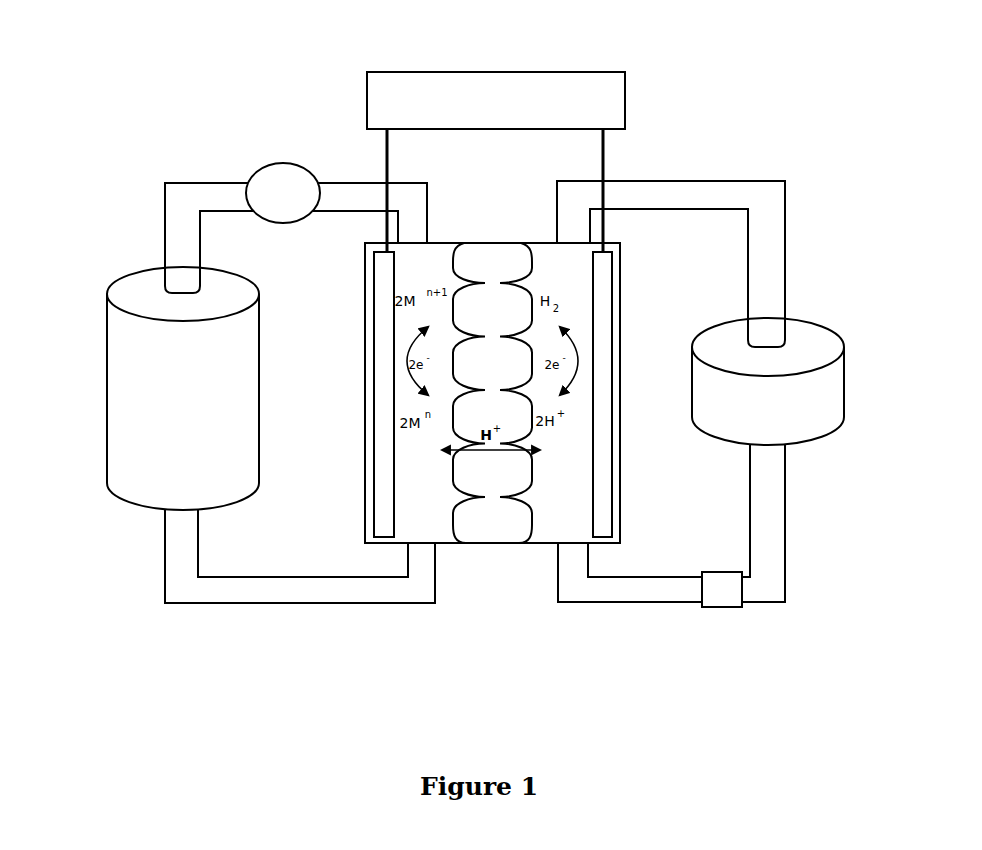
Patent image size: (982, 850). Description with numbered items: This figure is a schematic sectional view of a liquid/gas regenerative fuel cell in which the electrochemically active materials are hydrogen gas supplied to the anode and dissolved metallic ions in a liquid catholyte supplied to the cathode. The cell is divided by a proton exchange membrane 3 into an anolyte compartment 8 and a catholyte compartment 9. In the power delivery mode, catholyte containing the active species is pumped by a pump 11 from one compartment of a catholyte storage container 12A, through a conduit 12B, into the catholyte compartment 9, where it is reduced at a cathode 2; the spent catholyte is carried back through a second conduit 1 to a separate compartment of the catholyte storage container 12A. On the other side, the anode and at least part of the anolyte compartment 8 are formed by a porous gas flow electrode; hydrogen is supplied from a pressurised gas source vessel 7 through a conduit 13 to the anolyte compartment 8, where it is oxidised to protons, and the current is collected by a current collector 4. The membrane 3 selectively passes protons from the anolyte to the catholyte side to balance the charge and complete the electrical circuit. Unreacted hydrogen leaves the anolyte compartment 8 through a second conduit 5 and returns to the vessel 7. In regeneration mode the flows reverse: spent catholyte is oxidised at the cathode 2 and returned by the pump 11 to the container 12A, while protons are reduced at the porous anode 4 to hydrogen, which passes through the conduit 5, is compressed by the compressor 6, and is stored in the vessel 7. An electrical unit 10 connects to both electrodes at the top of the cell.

The second conduit 1 is at (282, 590).
The cathode 2 is at (385, 530).
The proton exchange membrane 3 is at (488, 527).
The current collector 4 is at (599, 530).
The second conduit 5 is at (668, 590).
The compressor 6 is at (722, 595).
The pressurised gas source vessel 7 is at (823, 402).
The anolyte compartment 8 is at (580, 273).
The catholyte compartment 9 is at (410, 268).
The power supply / load 10 is at (478, 92).
The pump 11 is at (285, 173).
The catholyte storage container 12A is at (127, 373).
The conduit 12B is at (212, 200).
The conduit 13 is at (697, 197).